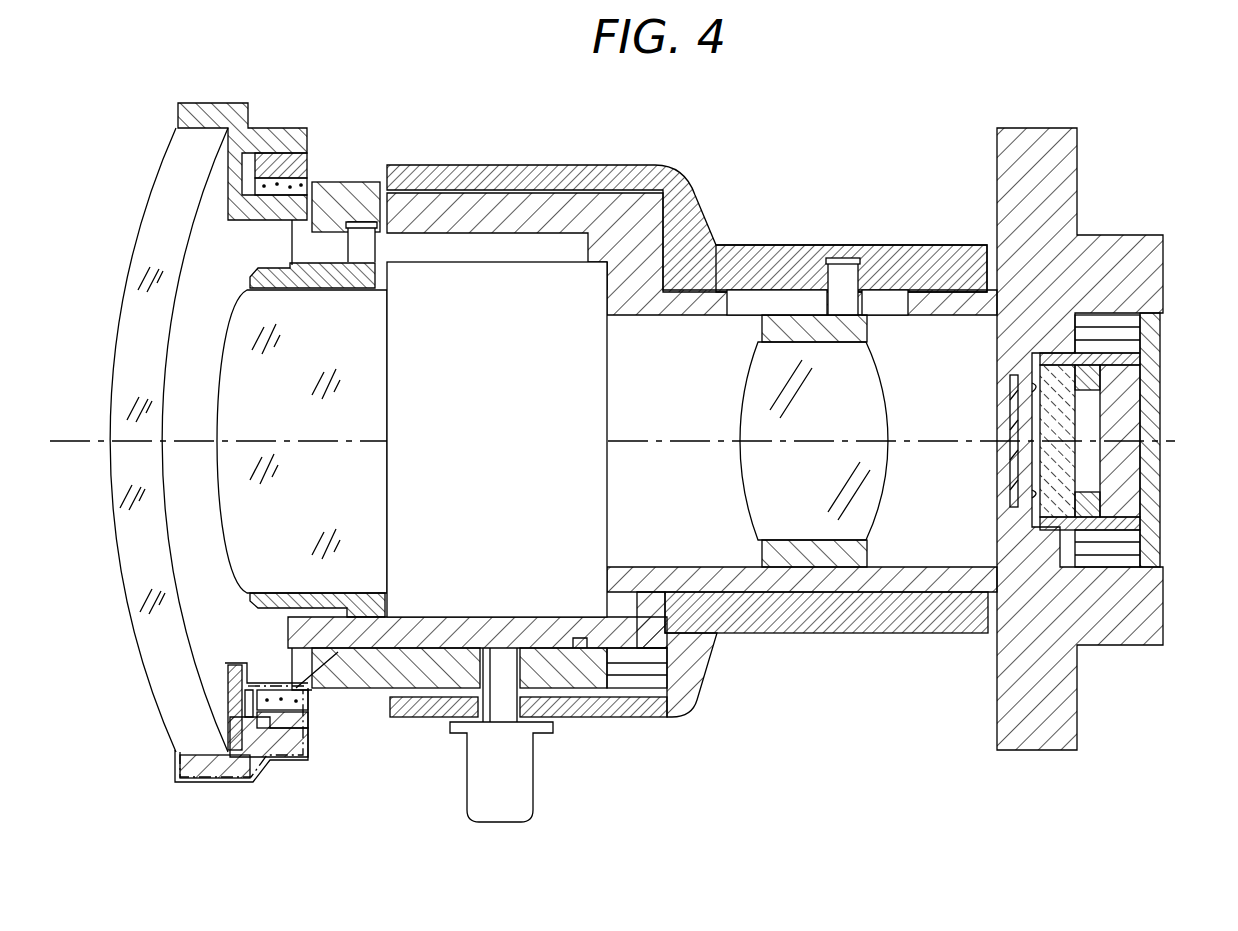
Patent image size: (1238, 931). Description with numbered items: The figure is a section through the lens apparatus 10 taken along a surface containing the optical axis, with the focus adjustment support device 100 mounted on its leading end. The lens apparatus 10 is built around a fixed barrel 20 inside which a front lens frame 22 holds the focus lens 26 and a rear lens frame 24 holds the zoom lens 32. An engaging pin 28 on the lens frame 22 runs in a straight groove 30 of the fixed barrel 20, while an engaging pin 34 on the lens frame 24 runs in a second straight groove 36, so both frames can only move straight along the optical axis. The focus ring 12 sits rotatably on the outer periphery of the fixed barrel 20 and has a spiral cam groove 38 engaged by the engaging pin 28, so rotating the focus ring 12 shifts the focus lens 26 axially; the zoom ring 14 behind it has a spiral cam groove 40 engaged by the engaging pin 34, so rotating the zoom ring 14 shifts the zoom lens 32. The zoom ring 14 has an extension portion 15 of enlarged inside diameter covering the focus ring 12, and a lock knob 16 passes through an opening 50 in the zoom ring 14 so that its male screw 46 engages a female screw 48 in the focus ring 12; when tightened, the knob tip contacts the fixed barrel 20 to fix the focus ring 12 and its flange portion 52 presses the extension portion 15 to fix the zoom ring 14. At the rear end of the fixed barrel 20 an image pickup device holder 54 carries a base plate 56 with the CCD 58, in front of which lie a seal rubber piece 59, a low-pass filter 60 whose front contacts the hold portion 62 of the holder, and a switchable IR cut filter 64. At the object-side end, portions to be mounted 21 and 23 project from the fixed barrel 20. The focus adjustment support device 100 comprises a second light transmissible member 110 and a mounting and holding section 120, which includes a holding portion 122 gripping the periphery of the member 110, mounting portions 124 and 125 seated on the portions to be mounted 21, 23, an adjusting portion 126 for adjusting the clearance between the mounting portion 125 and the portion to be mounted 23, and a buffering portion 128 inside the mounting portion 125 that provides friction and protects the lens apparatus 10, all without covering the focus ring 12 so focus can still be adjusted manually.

The lens apparatus 10 is at (722, 735).
The focus ring 12 is at (372, 215).
The zoom ring 14 is at (912, 262).
The extension portion 15 is at (553, 190).
The lock knob 16 is at (518, 772).
The fixed barrel 20 is at (617, 240).
The portion to be mounted 21 is at (258, 209).
The lens frame 22 is at (250, 286).
The portion to be mounted 23 is at (276, 190).
The lens frame 24 is at (783, 325).
The focus lens 26 is at (232, 412).
The engaging pin 28 is at (393, 213).
The straight groove 30 is at (473, 243).
The zoom lens 32 is at (750, 412).
The engaging pin 34 is at (852, 285).
The straight groove 36 is at (752, 300).
The cam groove 38 is at (335, 195).
The cam groove 40 is at (832, 258).
The male screw 46 is at (497, 713).
The female screw 48 is at (548, 690).
The opening 50 is at (432, 710).
The flange portion 52 is at (448, 718).
The image pickup device holder 54 is at (1150, 265).
The base plate 56 is at (1148, 425).
The CCD 58 is at (1128, 400).
The seal rubber piece 59 is at (1105, 510).
The low-pass filter 60 is at (1040, 505).
The hold portion 62 is at (1030, 380).
The IR cut filter 64 is at (1012, 465).
The focus adjustment support device 100 is at (229, 780).
The second light transmissible member 110 is at (108, 498).
The mounting and holding section 120 is at (176, 765).
The holding portion 122 is at (192, 778).
The mounting portion 124 is at (237, 693).
The mounting portion 125 is at (278, 750).
The adjusting portion 126 is at (306, 727).
The buffering portion 128 is at (308, 705).